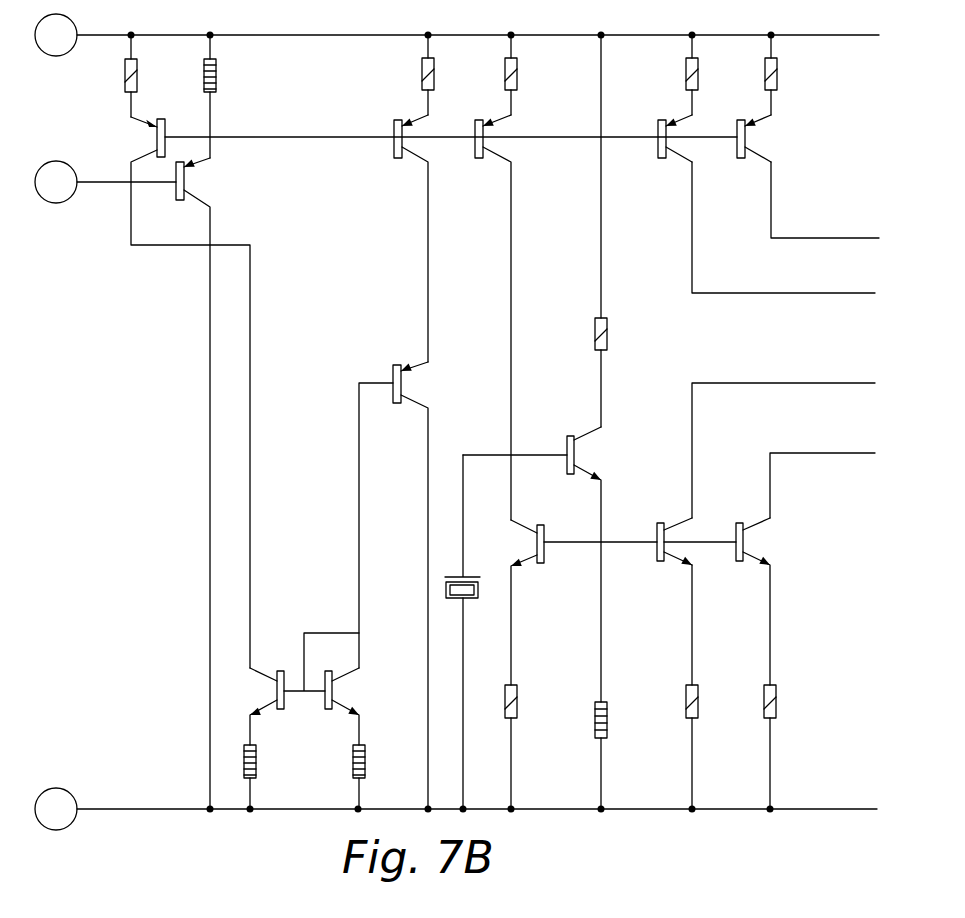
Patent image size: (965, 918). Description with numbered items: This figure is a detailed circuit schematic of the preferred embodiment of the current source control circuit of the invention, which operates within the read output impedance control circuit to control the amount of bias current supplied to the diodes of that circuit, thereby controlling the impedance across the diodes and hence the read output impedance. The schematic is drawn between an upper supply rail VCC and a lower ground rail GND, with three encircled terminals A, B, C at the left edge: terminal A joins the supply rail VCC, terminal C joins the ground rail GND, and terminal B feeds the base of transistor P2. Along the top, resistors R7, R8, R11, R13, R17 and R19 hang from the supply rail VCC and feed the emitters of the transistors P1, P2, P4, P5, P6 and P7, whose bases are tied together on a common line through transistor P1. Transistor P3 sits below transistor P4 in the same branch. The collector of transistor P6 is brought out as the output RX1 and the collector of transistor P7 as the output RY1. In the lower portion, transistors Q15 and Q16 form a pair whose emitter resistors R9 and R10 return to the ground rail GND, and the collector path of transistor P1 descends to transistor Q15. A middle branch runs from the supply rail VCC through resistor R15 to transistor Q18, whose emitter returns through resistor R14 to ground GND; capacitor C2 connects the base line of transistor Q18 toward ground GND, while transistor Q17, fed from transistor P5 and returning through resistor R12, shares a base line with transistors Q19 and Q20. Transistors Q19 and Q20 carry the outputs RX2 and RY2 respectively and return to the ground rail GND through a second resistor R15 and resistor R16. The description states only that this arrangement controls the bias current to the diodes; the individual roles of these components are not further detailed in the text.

The PNP transistor P1 is at (429, 392).
The PNP transistor P2 is at (197, 483).
The PNP transistor P3 is at (398, 585).
The PNP transistor P4 is at (407, 238).
The PNP transistor P5 is at (490, 317).
The PNP transistor P6 is at (670, 151).
The PNP transistor P7 is at (750, 151).
The NPN transistor Q15 is at (252, 706).
The NPN transistor Q16 is at (335, 689).
The NPN transistor Q17 is at (570, 602).
The NPN transistor Q18 is at (546, 564).
The NPN transistor Q19 is at (689, 529).
The NPN transistor Q20 is at (746, 589).
The resistor R7 is at (118, 76).
The resistor R8 is at (197, 96).
The resistor R9 is at (237, 777).
The resistor R10 is at (346, 775).
The resistor R11 is at (415, 75).
The resistor R12 is at (498, 745).
The resistor R13 is at (498, 75).
The resistor R14 is at (588, 754).
The resistor R15 is at (633, 422).
The resistor R16 is at (757, 745).
The resistor R17 is at (679, 75).
The resistor R19 is at (758, 75).
The capacitor C2 is at (469, 632).
The terminal A is at (56, 35).
The terminal B is at (105, 182).
The terminal C is at (56, 809).
The supply voltage rail VCC is at (505, 35).
The ground rail GND is at (505, 809).
The output RX1 is at (809, 236).
The output RY1 is at (848, 208).
The output RX2 is at (809, 446).
The output RY2 is at (847, 481).